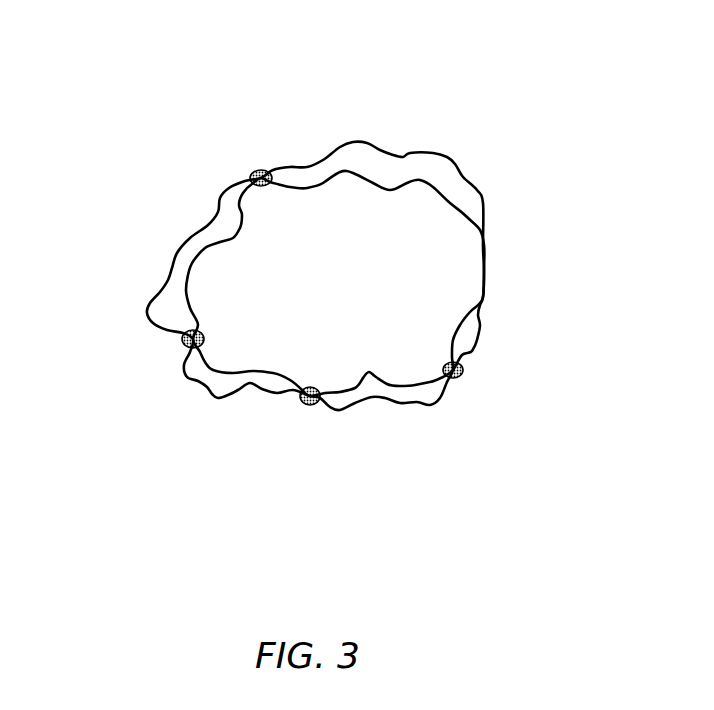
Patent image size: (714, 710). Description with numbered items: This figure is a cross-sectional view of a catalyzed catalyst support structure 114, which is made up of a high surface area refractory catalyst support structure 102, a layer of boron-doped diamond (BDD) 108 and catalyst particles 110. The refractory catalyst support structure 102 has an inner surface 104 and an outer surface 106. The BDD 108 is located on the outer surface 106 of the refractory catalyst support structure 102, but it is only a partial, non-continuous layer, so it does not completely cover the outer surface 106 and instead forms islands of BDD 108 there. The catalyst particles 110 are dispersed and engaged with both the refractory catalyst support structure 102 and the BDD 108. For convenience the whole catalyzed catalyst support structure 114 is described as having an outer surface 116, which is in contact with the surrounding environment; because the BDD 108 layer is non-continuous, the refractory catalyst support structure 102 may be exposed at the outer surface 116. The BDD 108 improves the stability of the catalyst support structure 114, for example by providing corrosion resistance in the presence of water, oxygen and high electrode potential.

The refractory catalyst support structure 102 is at (412, 301).
The inner surface 104 is at (295, 329).
The outer surface 106 is at (375, 376).
The boron-doped diamond 108 is at (370, 164).
The catalyst particles 110 is at (256, 170).
The catalyzed catalyst support structure 114 is at (115, 129).
The outer surface 116 is at (538, 168).